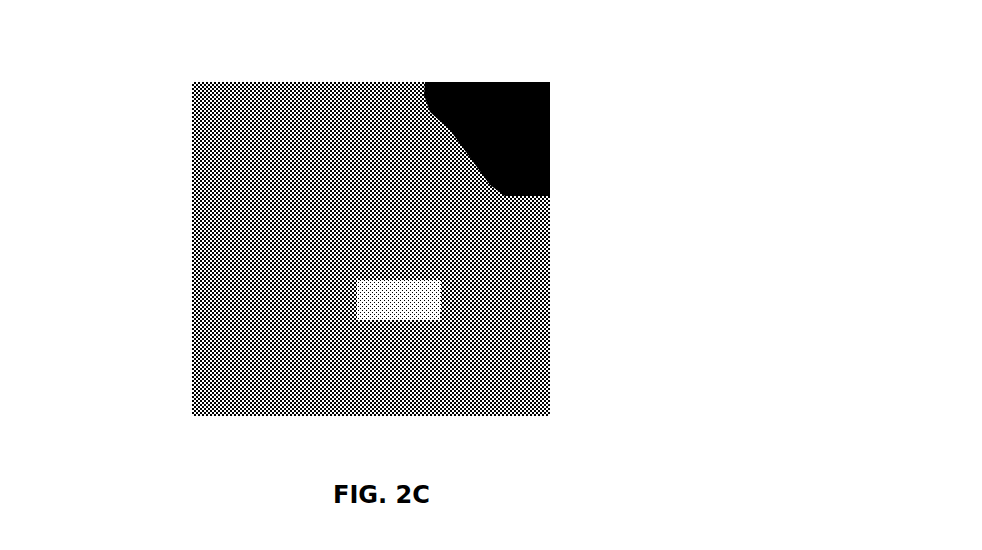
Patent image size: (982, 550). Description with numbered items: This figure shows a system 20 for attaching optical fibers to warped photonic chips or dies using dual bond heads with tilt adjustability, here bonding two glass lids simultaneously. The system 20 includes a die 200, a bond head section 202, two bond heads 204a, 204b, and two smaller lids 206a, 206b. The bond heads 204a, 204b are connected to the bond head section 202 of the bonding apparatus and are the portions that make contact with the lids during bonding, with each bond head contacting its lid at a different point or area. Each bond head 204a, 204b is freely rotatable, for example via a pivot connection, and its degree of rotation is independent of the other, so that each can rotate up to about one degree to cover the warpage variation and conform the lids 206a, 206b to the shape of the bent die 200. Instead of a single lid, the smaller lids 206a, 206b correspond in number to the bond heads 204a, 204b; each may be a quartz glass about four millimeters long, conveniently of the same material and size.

The system 20 is at (167, 113).
The bond head section 202 is at (546, 75).
The bond head 204a is at (239, 292).
The bond head 204b is at (437, 293).
The lid 206a is at (219, 323).
The lid 206b is at (463, 323).
The die 200 is at (214, 348).